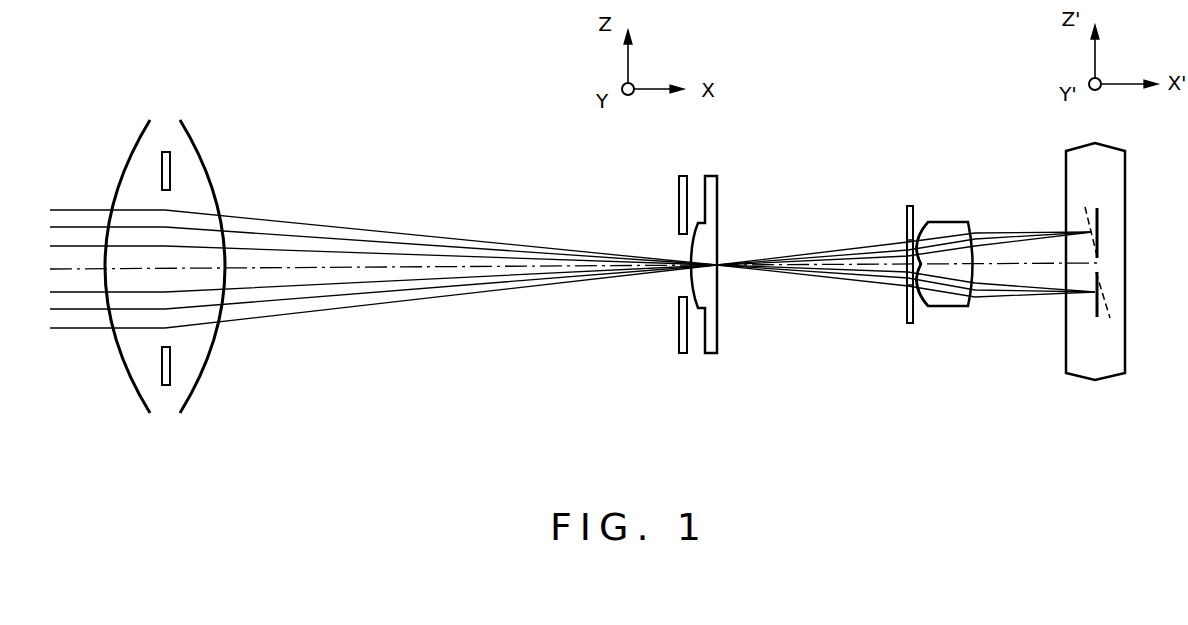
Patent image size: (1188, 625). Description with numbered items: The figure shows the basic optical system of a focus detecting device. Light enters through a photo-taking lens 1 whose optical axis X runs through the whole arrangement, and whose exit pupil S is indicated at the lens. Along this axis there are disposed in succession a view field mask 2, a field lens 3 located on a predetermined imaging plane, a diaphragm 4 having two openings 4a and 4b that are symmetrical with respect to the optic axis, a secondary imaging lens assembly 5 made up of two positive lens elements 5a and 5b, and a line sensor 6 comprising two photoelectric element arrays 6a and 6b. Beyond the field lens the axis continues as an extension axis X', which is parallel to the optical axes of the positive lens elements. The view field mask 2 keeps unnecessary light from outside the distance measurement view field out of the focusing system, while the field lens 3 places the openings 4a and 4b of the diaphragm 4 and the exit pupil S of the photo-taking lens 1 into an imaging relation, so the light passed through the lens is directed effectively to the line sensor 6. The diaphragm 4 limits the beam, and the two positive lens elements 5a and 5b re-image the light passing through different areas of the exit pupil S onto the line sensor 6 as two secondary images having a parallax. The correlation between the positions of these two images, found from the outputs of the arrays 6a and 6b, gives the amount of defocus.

The photo-taking lens 1 is at (194, 140).
The exit pupil S is at (170, 335).
The optical axis X is at (383, 227).
The view field mask 2 is at (682, 355).
The field lens 3 is at (715, 355).
The diaphragm 4 is at (882, 283).
The opening 4a is at (908, 240).
The opening 4b is at (908, 285).
The secondary imaging lens assembly 5 is at (958, 267).
The positive lens element 5a is at (928, 222).
The positive lens element 5b is at (928, 306).
The line sensor 6 is at (1121, 290).
The photoelectric element array 6a is at (1100, 215).
The photoelectric element array 6b is at (1100, 305).
The extension axis X' is at (907, 225).